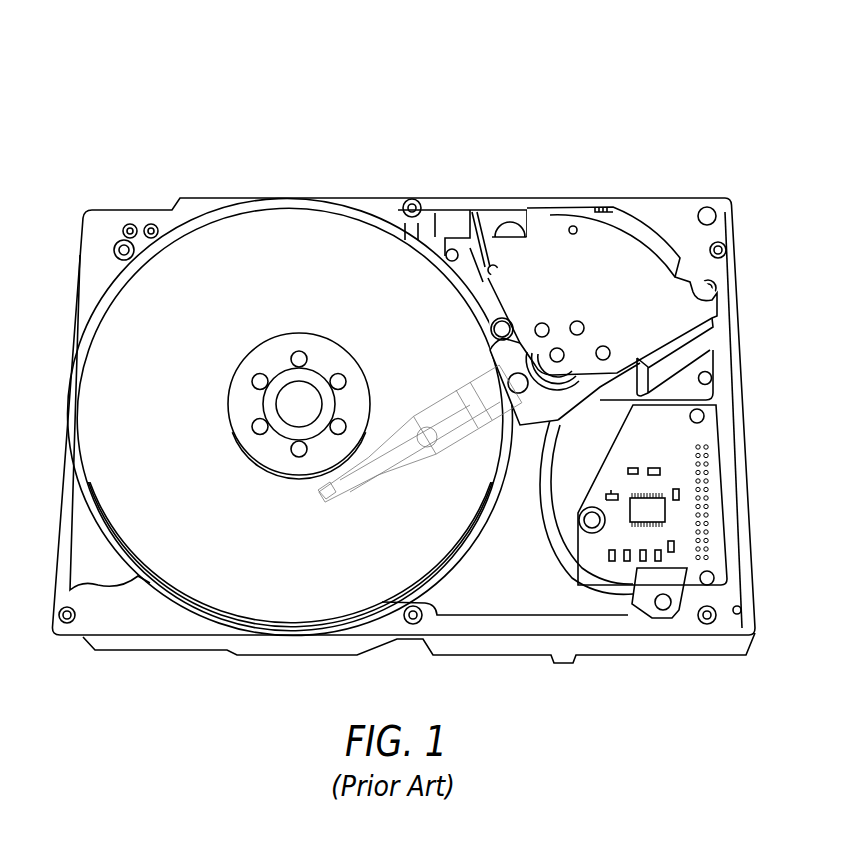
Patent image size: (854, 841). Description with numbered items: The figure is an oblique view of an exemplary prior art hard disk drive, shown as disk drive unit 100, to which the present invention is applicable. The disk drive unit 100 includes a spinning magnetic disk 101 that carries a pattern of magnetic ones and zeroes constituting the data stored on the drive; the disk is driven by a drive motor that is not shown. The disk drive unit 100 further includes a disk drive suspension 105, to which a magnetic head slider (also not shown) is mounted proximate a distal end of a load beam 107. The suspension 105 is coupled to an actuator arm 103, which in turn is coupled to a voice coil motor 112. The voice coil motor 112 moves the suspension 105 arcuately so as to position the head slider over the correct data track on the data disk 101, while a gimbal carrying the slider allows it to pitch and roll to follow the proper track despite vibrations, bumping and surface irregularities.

The disk drive unit 100 is at (307, 165).
The magnetic disk 101 is at (252, 250).
The actuator arm 103 is at (532, 413).
The disk drive suspension 105 is at (359, 511).
The load beam 107 is at (402, 430).
The voice coil motor 112 is at (588, 287).